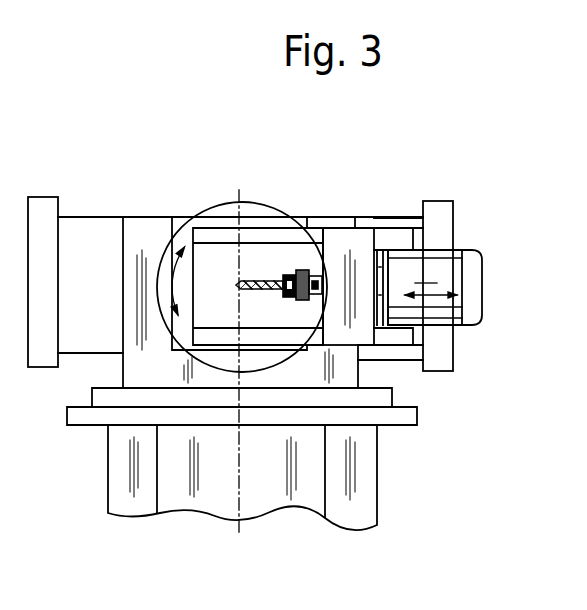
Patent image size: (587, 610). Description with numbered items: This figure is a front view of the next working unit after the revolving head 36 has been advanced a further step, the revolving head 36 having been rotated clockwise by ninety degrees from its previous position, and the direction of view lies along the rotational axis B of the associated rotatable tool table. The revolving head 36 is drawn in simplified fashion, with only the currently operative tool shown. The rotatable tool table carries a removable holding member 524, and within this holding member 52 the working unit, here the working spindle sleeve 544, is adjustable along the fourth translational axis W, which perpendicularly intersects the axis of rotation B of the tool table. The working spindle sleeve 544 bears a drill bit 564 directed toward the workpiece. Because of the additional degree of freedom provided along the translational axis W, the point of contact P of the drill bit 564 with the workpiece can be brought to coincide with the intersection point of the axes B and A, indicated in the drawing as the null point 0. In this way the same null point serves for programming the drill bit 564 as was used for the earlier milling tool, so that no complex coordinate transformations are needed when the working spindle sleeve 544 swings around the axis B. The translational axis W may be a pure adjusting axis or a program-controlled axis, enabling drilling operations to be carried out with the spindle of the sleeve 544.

The revolving head 36 is at (142, 208).
The holding member 52 is at (211, 207).
The removable holding member 524 is at (356, 250).
The working spindle sleeve 544 is at (450, 270).
The drill bit 564 is at (262, 283).
The axis of rotation B is at (173, 272).
The point of contact P is at (208, 93).
The drill tip point 0 is at (237, 284).
The fourth translational axis W is at (445, 300).
The axis A is at (240, 522).